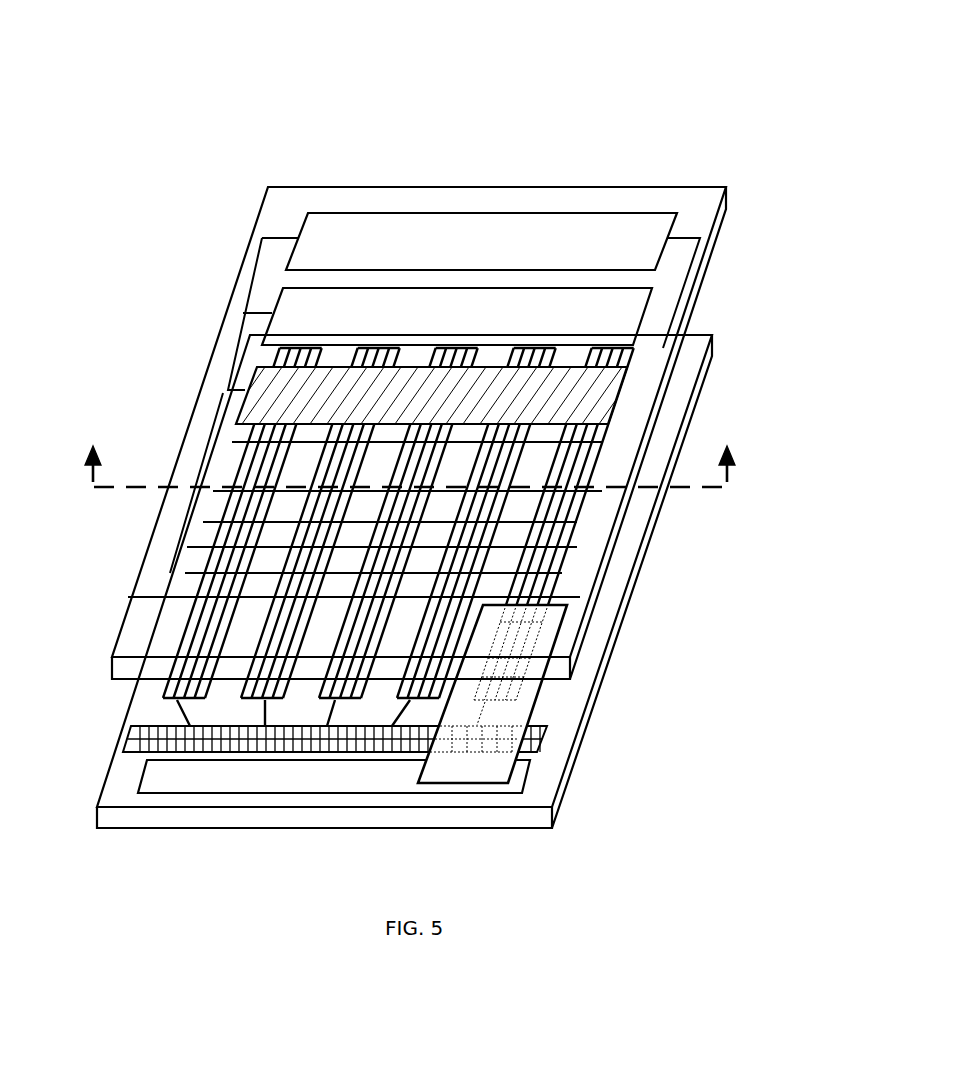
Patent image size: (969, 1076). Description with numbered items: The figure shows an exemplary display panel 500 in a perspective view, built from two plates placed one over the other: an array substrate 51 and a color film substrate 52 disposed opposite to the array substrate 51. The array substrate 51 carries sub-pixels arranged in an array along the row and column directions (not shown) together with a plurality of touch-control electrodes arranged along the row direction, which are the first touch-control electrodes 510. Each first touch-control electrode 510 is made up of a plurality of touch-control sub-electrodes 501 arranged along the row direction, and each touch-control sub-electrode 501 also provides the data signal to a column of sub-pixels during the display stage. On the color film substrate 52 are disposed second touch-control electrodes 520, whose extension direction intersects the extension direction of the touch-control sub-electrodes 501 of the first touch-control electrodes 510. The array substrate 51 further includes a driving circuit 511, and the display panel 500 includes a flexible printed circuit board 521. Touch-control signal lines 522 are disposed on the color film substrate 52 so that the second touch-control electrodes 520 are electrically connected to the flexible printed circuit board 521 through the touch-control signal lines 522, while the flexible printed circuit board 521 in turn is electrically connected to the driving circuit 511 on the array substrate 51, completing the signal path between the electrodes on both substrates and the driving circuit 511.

The display panel 500 is at (766, 76).
The array substrate 51 is at (618, 585).
The color film substrate 52 is at (706, 215).
The first touch-control electrodes 510 is at (163, 687).
The touch-control sub-electrodes 501 is at (165, 692).
The driving circuit 511 is at (253, 783).
The second touch-control electrodes 520 is at (528, 232).
The flexible printed circuit board 521 is at (495, 758).
The touch-control signal lines 522 is at (176, 487).